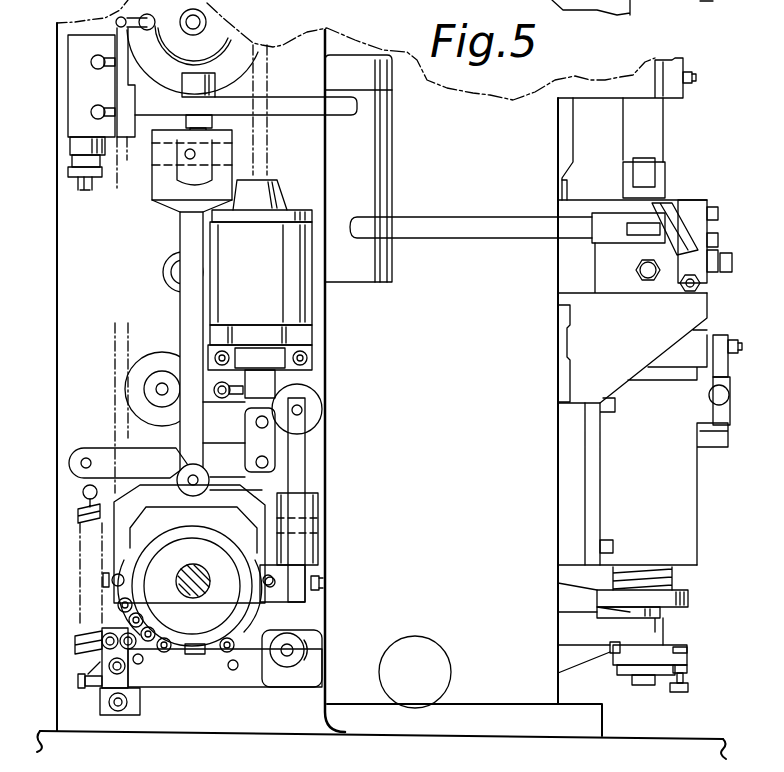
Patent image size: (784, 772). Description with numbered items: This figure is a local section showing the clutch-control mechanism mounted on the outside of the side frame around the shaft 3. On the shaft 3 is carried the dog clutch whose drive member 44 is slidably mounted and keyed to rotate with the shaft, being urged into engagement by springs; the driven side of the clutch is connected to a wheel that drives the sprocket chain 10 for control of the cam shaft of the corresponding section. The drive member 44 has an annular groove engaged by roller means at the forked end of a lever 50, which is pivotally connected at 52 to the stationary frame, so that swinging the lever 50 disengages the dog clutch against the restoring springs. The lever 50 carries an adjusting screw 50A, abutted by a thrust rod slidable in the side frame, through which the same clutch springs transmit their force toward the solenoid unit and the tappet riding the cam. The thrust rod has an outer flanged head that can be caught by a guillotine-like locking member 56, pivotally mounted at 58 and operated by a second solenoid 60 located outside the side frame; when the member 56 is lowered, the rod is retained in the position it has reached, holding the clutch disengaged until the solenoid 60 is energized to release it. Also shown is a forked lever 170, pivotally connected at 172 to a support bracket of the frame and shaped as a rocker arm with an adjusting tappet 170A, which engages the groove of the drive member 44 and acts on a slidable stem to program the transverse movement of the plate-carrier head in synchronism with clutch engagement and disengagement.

The shaft 3 is at (190, 570).
The sprocket chain 10 is at (152, 652).
The drive member 44 is at (246, 628).
The lever 50 is at (188, 238).
The adjusting screw 50A is at (210, 478).
The pivot of lever 52 is at (146, 160).
The guillotine-like locking member 56 is at (125, 461).
The pivot of locking member 58 is at (70, 453).
The second solenoid 60 is at (222, 309).
The forked lever 170 is at (300, 483).
The adjusting tappet 170A is at (302, 408).
The pivot of forked lever 172 is at (318, 514).